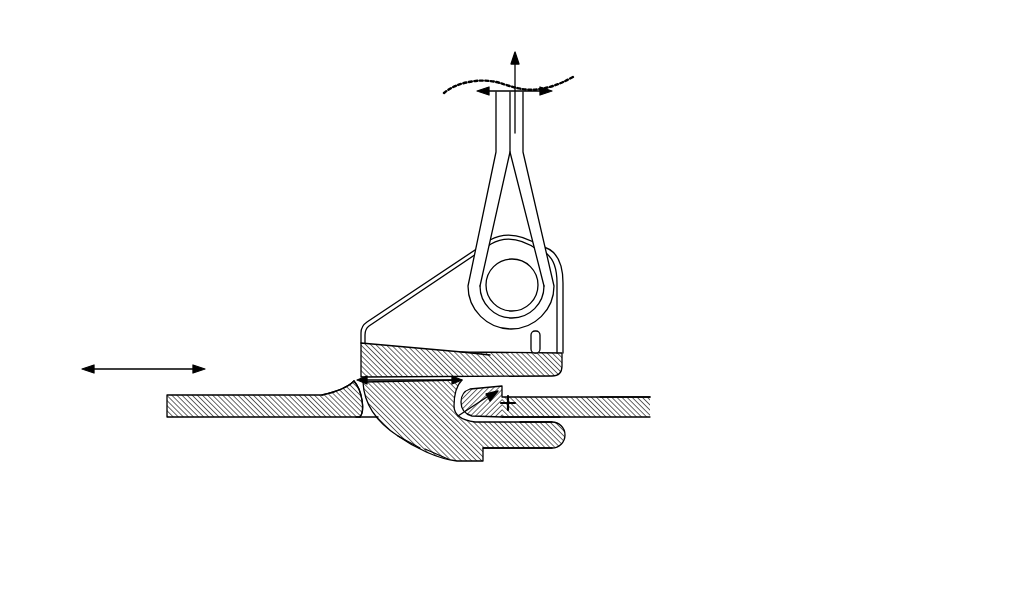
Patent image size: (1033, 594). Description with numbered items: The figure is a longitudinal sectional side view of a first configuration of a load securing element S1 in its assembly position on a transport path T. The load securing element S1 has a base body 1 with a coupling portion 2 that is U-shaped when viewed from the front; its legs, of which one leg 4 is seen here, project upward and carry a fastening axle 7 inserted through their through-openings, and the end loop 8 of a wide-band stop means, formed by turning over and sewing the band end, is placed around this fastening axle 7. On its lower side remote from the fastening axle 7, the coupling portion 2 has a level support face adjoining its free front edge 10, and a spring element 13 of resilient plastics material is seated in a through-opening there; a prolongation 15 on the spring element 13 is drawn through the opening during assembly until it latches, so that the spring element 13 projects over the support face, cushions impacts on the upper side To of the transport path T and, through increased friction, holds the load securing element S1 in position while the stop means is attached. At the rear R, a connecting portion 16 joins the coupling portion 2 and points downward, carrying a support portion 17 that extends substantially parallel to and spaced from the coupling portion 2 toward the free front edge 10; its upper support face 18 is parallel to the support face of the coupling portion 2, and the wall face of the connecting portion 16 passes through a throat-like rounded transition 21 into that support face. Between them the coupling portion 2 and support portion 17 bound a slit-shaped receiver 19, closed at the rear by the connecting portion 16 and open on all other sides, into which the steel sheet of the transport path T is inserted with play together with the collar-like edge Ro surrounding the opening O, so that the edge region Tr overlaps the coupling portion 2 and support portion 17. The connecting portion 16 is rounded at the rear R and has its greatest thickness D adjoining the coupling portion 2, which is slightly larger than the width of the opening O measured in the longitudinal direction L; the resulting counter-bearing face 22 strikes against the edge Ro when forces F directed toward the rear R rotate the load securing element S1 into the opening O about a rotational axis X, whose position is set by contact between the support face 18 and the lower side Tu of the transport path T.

The load securing element S1 is at (396, 188).
The base body 1 is at (425, 346).
The coupling portion 2 is at (362, 322).
The leg 4 is at (492, 294).
The fastening axle 7 is at (518, 291).
The end loop 8 is at (490, 185).
The free front edge 10 is at (560, 366).
The spring element 13 is at (540, 390).
The prolongation 15 is at (468, 346).
The connecting portion 16 is at (349, 386).
The support portion 17 is at (501, 440).
The support face 18 is at (530, 422).
The receiver 19 is at (443, 431).
The transition 21 is at (413, 341).
The counter-bearing face 22 is at (447, 432).
The rear R is at (333, 344).
The edge Ro is at (348, 383).
The lower side Tu is at (242, 428).
The transport path T is at (622, 417).
The edge region Tr is at (562, 420).
The upper side To is at (637, 392).
The opening O is at (362, 424).
The longitudinal direction L is at (143, 359).
The forces F is at (508, 80).
The greatest thickness D is at (409, 381).
The rotational axis X is at (546, 449).